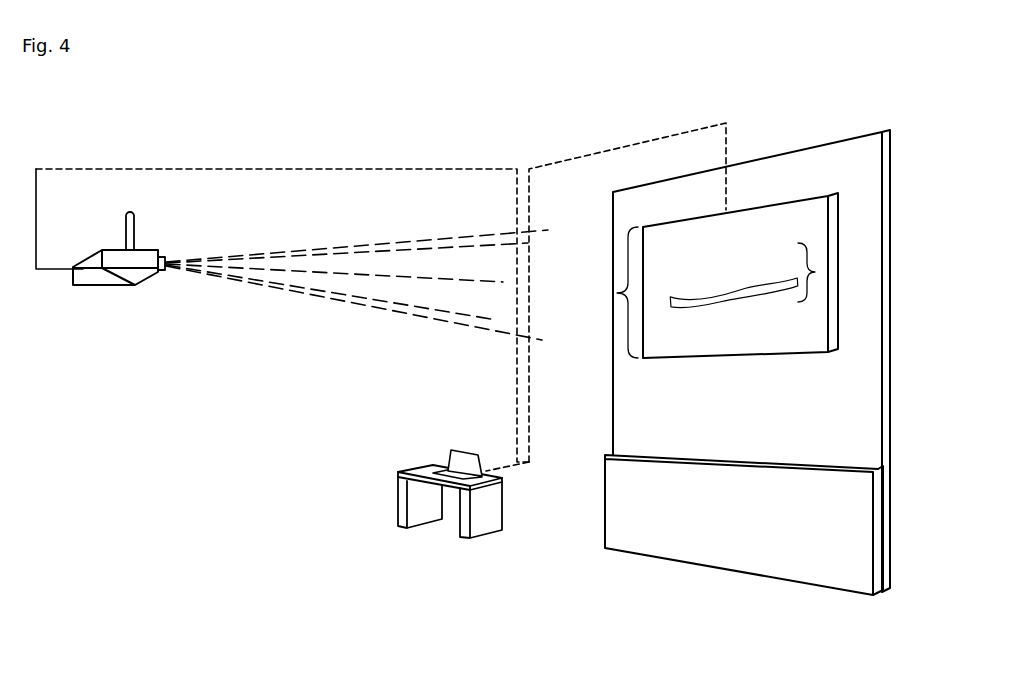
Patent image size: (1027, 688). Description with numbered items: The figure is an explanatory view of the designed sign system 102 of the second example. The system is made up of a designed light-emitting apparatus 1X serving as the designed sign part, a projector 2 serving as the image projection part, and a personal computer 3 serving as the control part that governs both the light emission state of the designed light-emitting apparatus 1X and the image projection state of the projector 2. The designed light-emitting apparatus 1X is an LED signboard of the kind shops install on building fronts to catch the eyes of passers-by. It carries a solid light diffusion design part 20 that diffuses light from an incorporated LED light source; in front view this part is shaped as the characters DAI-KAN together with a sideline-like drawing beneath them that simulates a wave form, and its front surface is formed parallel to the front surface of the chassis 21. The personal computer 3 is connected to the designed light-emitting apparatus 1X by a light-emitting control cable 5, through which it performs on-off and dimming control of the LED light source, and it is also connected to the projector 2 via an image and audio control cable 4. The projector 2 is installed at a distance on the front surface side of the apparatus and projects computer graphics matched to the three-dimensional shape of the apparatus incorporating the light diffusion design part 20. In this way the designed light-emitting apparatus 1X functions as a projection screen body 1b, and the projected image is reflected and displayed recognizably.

The designed sign system 102 is at (323, 585).
The designed light-emitting apparatus 1X is at (799, 168).
The projection screen body 1b is at (617, 293).
The projector 2 is at (123, 265).
The personal computer 3 is at (457, 463).
The image and audio control cable 4 is at (293, 168).
The light-emitting control cable 5 is at (620, 148).
The light diffusion design part 20 is at (812, 272).
The chassis 21 is at (813, 225).